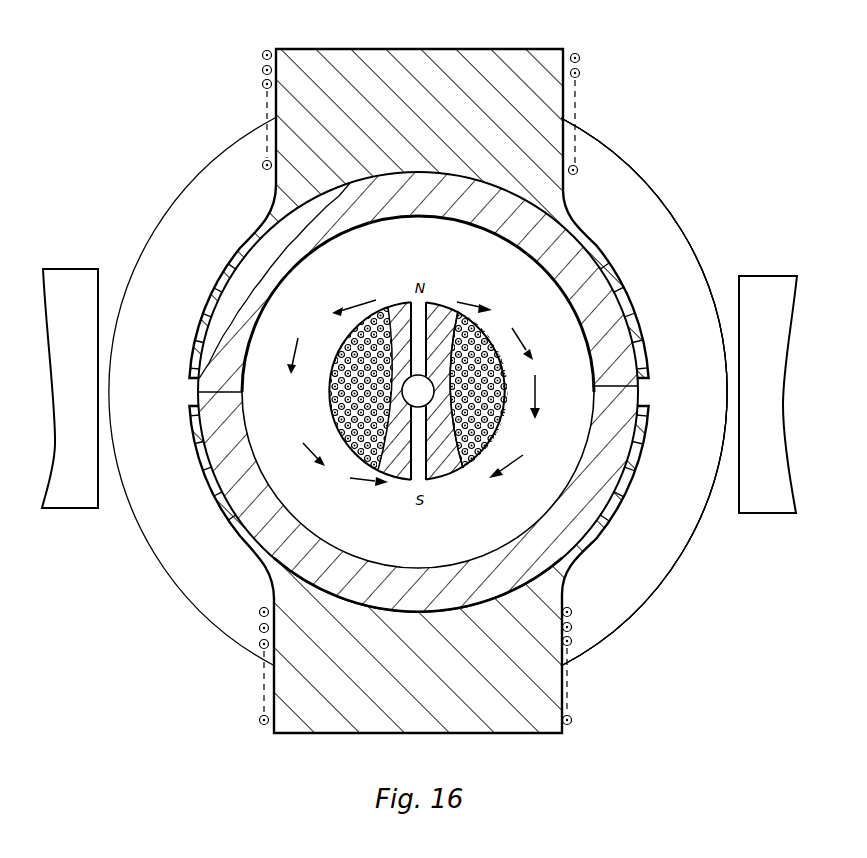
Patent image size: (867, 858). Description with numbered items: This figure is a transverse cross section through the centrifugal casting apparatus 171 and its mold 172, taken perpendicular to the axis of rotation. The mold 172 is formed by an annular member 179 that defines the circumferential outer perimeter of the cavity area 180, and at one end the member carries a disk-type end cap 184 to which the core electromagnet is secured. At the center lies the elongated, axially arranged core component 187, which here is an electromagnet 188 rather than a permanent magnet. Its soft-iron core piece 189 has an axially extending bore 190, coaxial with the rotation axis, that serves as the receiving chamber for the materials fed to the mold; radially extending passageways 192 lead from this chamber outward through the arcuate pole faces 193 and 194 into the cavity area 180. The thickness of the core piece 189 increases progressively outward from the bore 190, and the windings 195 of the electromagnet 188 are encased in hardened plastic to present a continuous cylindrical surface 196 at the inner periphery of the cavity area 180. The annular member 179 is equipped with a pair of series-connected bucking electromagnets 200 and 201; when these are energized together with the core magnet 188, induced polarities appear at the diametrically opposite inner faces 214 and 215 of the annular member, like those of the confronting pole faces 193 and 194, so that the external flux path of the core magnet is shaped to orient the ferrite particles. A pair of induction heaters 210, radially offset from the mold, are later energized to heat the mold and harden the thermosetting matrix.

The apparatus 171 is at (622, 161).
The mold 172 is at (648, 190).
The end cap 184 is at (676, 227).
The electromagnet 200 is at (540, 49).
The electromagnet 201 is at (504, 733).
The induction heaters 210 is at (767, 275).
The inner face 214 is at (400, 219).
The inner face 215 is at (424, 567).
The continuous cylindrical surface 196 is at (591, 386).
The annular member 179 is at (629, 318).
The cavity area 180 is at (638, 387).
The windings 195 is at (507, 425).
The arcuate pole face 194 is at (407, 481).
The electromagnet 188 is at (440, 305).
The core piece 189 is at (443, 481).
The core component 187 is at (486, 322).
The arcuate pole face 193 is at (428, 302).
The radially extending passageway 192 is at (427, 482).
The bore 190 is at (406, 380).